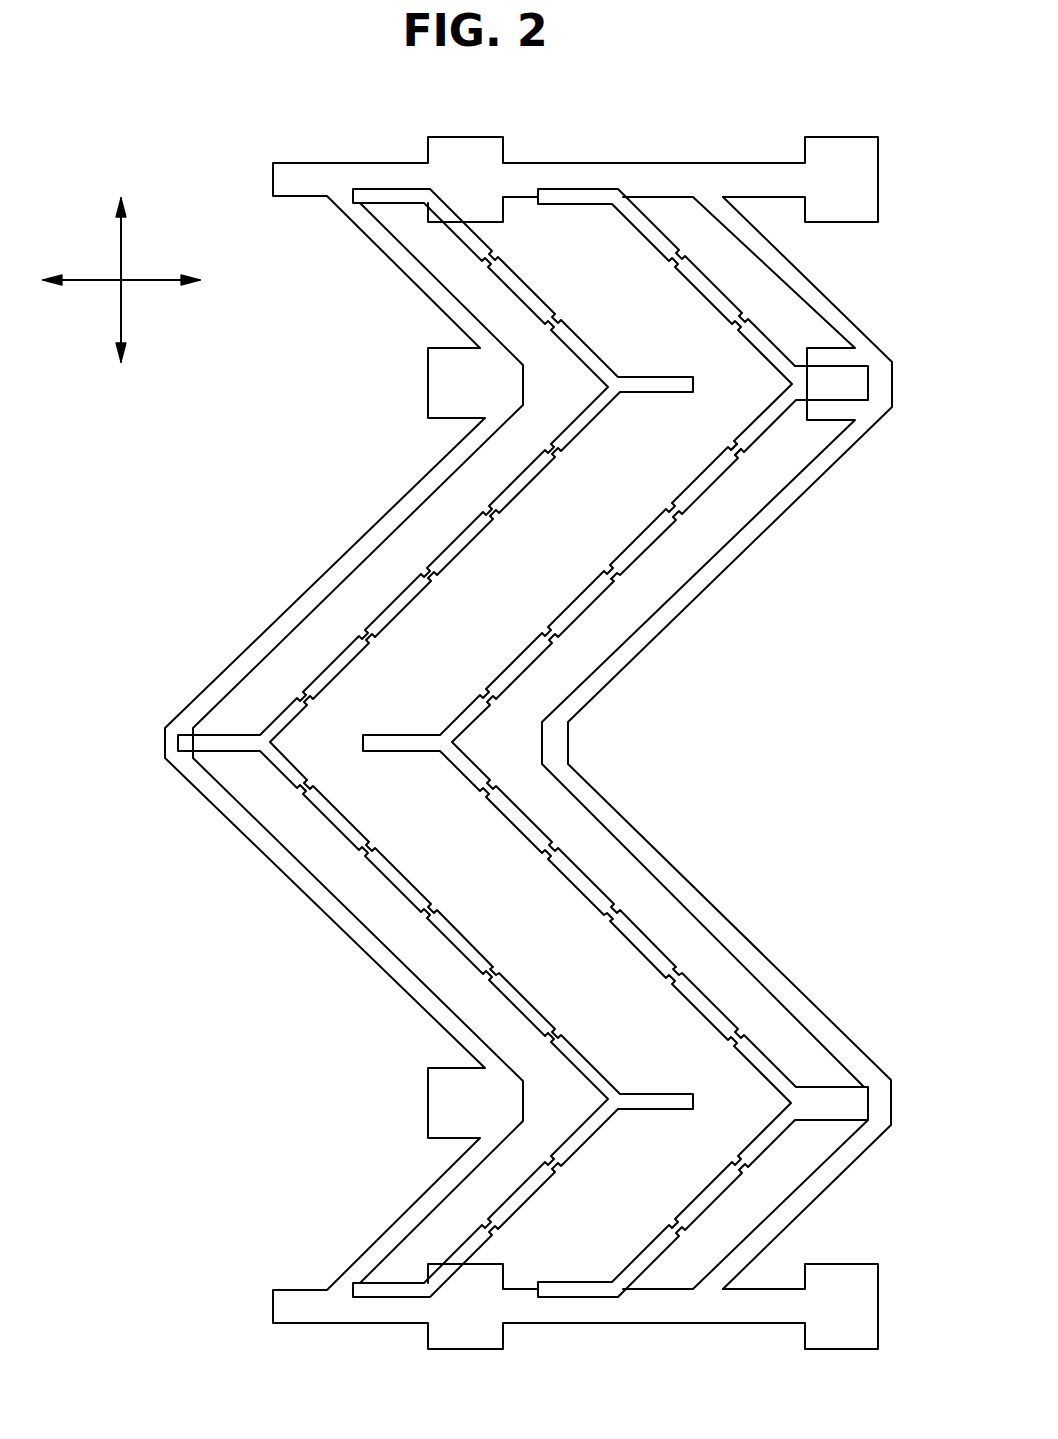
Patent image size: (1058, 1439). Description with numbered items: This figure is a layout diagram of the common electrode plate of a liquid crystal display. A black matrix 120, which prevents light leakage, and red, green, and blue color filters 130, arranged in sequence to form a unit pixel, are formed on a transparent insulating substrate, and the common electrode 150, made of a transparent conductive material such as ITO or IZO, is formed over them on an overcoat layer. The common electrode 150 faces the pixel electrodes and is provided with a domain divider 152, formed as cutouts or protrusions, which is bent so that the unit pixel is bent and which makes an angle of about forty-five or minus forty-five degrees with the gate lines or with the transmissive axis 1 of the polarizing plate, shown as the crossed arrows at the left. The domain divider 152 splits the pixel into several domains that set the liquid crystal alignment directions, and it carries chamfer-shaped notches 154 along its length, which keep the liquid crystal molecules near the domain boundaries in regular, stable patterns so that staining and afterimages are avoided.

The transmissive axis 1 is at (134, 270).
The black matrix 120 is at (544, 743).
The color filters 130 is at (791, 263).
The common electrode 150 is at (539, 687).
The domain divider 152 is at (713, 485).
The notch 154 is at (740, 452).